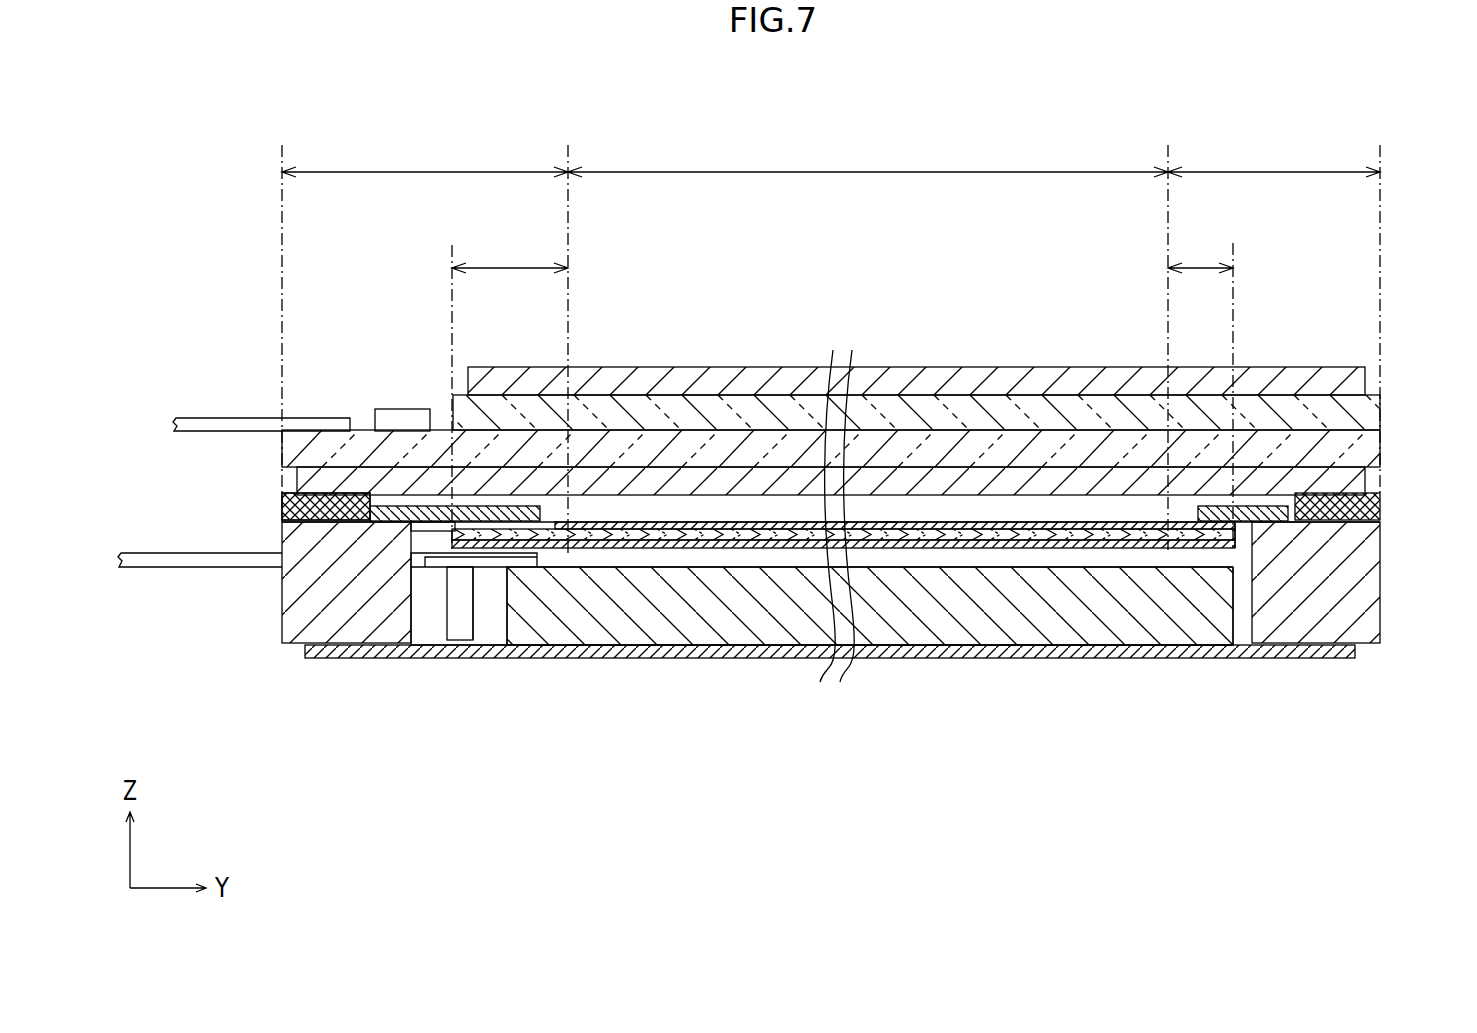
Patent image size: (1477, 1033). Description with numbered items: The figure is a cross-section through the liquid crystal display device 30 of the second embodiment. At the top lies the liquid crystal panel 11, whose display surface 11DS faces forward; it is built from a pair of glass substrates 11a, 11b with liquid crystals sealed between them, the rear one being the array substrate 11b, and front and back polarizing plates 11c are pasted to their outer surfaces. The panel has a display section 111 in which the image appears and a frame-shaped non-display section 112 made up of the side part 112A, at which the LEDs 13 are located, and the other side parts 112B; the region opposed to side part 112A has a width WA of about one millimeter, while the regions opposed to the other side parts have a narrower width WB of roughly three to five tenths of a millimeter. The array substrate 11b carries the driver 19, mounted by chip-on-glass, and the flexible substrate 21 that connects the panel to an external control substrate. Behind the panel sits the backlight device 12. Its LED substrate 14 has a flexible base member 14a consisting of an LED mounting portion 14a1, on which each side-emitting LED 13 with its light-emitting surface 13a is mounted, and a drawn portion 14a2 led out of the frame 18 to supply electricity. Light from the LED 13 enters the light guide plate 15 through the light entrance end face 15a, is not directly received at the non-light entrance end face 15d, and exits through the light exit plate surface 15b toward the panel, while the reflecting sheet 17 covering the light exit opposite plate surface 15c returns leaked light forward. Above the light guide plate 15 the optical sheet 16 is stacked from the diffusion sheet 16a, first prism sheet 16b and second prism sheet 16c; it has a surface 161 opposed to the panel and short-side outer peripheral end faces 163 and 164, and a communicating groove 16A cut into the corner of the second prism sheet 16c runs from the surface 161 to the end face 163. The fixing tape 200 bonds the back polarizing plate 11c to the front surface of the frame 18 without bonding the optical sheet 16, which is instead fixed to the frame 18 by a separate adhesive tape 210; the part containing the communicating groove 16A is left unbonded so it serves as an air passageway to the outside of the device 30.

The liquid crystal panel 11 is at (831, 376).
The glass substrate 11a is at (540, 412).
The array substrate 11b is at (590, 440).
The polarizing plate 11c is at (734, 487).
The display surface 11DS is at (960, 367).
The backlight device 12 is at (771, 670).
The LED 13 is at (451, 644).
The light-emitting surface 13a is at (473, 602).
The LED substrate 14 is at (318, 673).
The base member 14a is at (318, 673).
The LED mounting portion 14a1 is at (440, 560).
The drawn portion 14a2 is at (138, 558).
The light guide plate 15 is at (870, 642).
The light entrance end face 15a is at (502, 612).
The light exit plate surface 15b is at (713, 558).
The light exit opposite plate surface 15c is at (630, 652).
The non-light entrance end face 15d is at (1231, 585).
The optical sheet 16 is at (815, 645).
The diffusion sheet 16a is at (1140, 545).
The first prism sheet 16b is at (1090, 535).
The second prism sheet 16c is at (1030, 528).
The communicating groove 16A is at (365, 522).
The surface opposed to the liquid crystal panel 161 is at (880, 520).
The short-side outer peripheral end face 163 is at (405, 526).
The short-side outer peripheral end face 164 is at (1240, 531).
The reflecting sheet 17 is at (672, 652).
The frame 18 is at (305, 600).
The driver 19 is at (391, 409).
The flexible substrate 21 is at (234, 418).
The liquid crystal display device 30 is at (1327, 316).
The fixing tape 200 is at (327, 493).
The adhesive tape 210 is at (438, 506).
The display section 111 is at (868, 156).
The non-display section 112 is at (831, 143).
The side part 112A is at (425, 143).
The side part 112B is at (1274, 143).
The width of region opposed to side part 112A WA is at (510, 253).
The width of region opposed to other side parts WB is at (1200, 253).